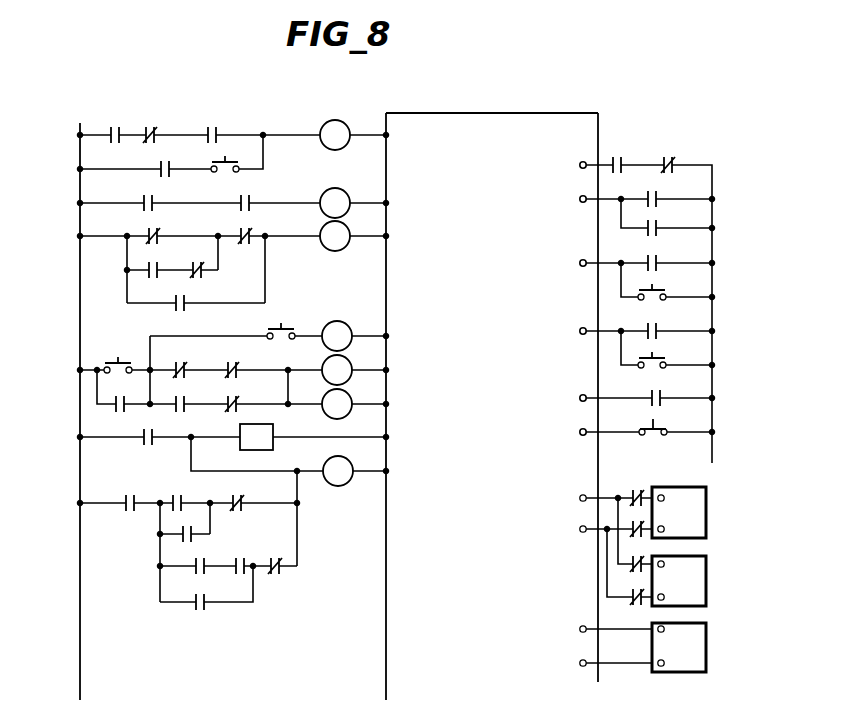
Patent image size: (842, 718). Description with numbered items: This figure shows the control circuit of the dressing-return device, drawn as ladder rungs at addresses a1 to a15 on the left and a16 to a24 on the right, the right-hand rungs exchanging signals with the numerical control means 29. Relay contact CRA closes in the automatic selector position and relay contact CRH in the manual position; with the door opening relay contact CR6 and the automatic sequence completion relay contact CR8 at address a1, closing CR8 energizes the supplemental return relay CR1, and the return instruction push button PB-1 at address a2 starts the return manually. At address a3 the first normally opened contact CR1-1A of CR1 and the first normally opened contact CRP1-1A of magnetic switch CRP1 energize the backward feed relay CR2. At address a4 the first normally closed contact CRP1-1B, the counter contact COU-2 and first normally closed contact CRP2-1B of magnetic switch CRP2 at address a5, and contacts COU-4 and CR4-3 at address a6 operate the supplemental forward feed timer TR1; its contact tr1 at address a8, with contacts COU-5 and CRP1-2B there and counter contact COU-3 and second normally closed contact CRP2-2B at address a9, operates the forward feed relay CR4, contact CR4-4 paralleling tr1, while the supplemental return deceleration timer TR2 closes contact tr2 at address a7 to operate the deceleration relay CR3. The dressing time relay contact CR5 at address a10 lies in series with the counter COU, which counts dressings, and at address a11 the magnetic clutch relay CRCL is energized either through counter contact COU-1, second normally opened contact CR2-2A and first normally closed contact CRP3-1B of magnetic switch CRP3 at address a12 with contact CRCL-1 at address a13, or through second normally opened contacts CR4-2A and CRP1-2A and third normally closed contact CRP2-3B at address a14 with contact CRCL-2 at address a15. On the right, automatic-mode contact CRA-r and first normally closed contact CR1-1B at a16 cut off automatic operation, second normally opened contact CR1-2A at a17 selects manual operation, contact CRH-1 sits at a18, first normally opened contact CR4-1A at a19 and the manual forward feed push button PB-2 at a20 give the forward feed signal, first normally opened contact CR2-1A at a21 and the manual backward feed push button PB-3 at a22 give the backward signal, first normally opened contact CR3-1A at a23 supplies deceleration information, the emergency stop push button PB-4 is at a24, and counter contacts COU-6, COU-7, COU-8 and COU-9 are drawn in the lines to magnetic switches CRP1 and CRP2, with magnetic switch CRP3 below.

The numerical control means 29 is at (480, 112).
The circuit address a1 is at (210, 135).
The circuit address a2 is at (148, 156).
The circuit address a3 is at (210, 203).
The circuit address a4 is at (210, 265).
The circuit address a5 is at (126, 270).
The circuit line a6 is at (149, 303).
The circuit address a7 is at (210, 366).
The circuit address a8 is at (210, 383).
The circuit address a9 is at (210, 391).
The circuit line a10 is at (210, 437).
The circuit line a11 is at (210, 501).
The circuit address a12 is at (165, 548).
The circuit line a13 is at (122, 534).
The circuit address a14 is at (165, 566).
The circuit line a15 is at (143, 588).
The circuit address a16 is at (630, 310).
The circuit address a17 is at (630, 199).
The circuit line a18 is at (630, 217).
The circuit address a19 is at (630, 263).
The circuit line a20 is at (630, 284).
The circuit address a21 is at (630, 331).
The circuit line a22 is at (630, 352).
The circuit address a23 is at (630, 398).
The circuit line a24 is at (630, 432).
The supplemental return relay CR1 is at (329, 125).
The backward feed relay CR2 is at (337, 191).
The deceleration relay CR3 is at (330, 323).
The forward feed relay CR4 is at (340, 365).
The supplemental forward feed timer TR1 is at (342, 235).
The supplemental return deceleration timer TR2 is at (340, 399).
The magnetic clutch relay CRCL is at (343, 455).
The counter COU is at (273, 438).
The magnetic switch CRP1 is at (706, 509).
The magnetic switch CRP2 is at (706, 586).
The magnetic switch CRP3 is at (706, 638).
The relay contact CRA is at (107, 126).
The door opening relay contact CR6 is at (151, 126).
The automatic sequence completion relay contact CR8 is at (212, 126).
The original or moved original return instruction push button PB-1 is at (233, 161).
The relay contact CRH is at (161, 164).
The first normally opened contact of supplemental return relay CR1-1A is at (143, 200).
The first normally opened contact of magnetic switch CRP1-1A is at (242, 200).
The contact COU-4 is at (149, 231).
The first normally closed contact of magnetic switch CRP1-1B is at (241, 231).
The normally opened contact of counter COU-2 is at (152, 280).
The first normally closed contact of magnetic switch CRP2-1B is at (205, 272).
The contact CR4-3 is at (180, 311).
The timer contact tr2 is at (284, 330).
The timer contact tr1 is at (109, 362).
The contact COU-5 is at (178, 365).
The second normally closed contact of magnetic switch CRP1-2B is at (232, 365).
The contact CR4-4 is at (127, 430).
The normally opened contact of counter COU-3 is at (178, 398).
The second normally closed contact of magnetic switch CRP2-2B is at (232, 398).
The dressing time relay contact CR5 is at (150, 431).
The normally opened contact of counter COU-1 is at (129, 500).
The second normally opened contact of backward feed relay CR2-2A is at (176, 499).
The first normally closed contact of magnetic switch CRP3-1B is at (236, 507).
The contact CRCL-1 is at (236, 534).
The second normally opened contact of forward feed relay CR4-2A is at (218, 556).
The second normally opened contact of magnetic switch CRP1-2A is at (240, 564).
The third normally closed contact of magnetic switch CRP2-3B is at (275, 572).
The contact CRCL-2 is at (200, 607).
The contact CRA (right) CRA-r is at (622, 153).
The first normally closed contact of supplemental return relay CR1-1B is at (680, 153).
The second normally opened contact of supplemental return relay CR1-2A is at (660, 196).
The contact CRH-1 is at (660, 226).
The first normally opened contact of forward feed relay CR4-1A is at (660, 261).
The manual forward feed push button PB-2 is at (665, 290).
The first normally opened contact of backward feed relay CR2-1A is at (660, 329).
The manual backward feed push button PB-3 is at (665, 358).
The first normally opened contact of deceleration relay CR3-1A is at (660, 396).
The emergency stop push button PB-4 is at (675, 432).
The contact COU-6 is at (645, 492).
The contact COU-7 is at (640, 528).
The contact COU-8 is at (644, 555).
The contact COU-9 is at (642, 604).